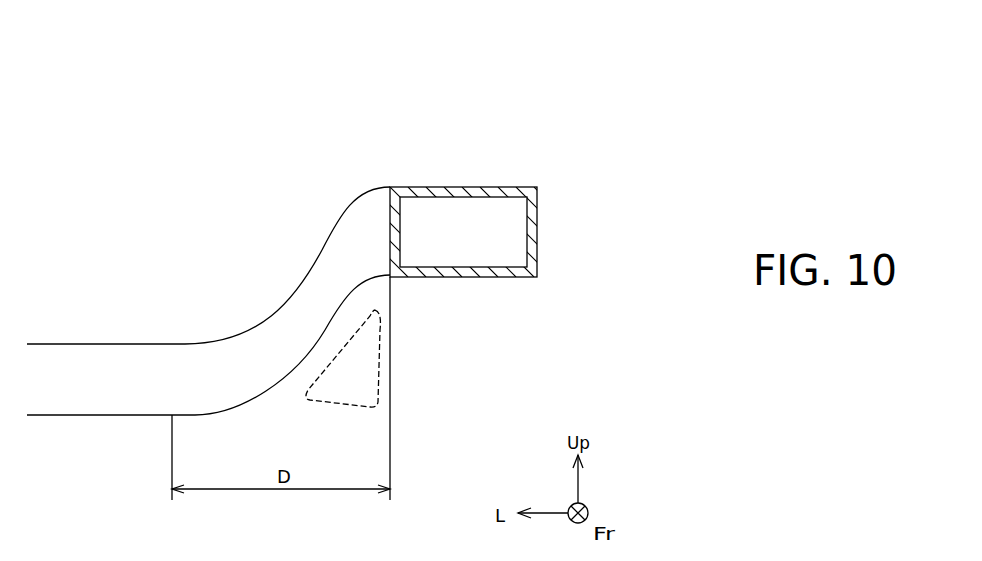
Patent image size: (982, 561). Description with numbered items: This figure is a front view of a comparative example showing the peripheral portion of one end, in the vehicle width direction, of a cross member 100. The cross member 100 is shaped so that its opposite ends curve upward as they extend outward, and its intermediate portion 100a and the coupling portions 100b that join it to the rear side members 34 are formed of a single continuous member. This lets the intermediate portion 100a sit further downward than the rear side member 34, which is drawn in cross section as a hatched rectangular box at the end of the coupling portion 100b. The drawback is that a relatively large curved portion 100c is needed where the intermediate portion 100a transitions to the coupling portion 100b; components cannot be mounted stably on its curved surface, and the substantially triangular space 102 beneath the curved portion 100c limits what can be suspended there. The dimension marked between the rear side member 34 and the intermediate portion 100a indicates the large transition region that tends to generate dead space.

The cross member 100 is at (208, 219).
The intermediate portion 100a is at (70, 360).
The coupling portion 100b is at (368, 195).
The curved portion 100c is at (262, 327).
The rear side member 34 is at (518, 185).
The space 102 is at (381, 355).